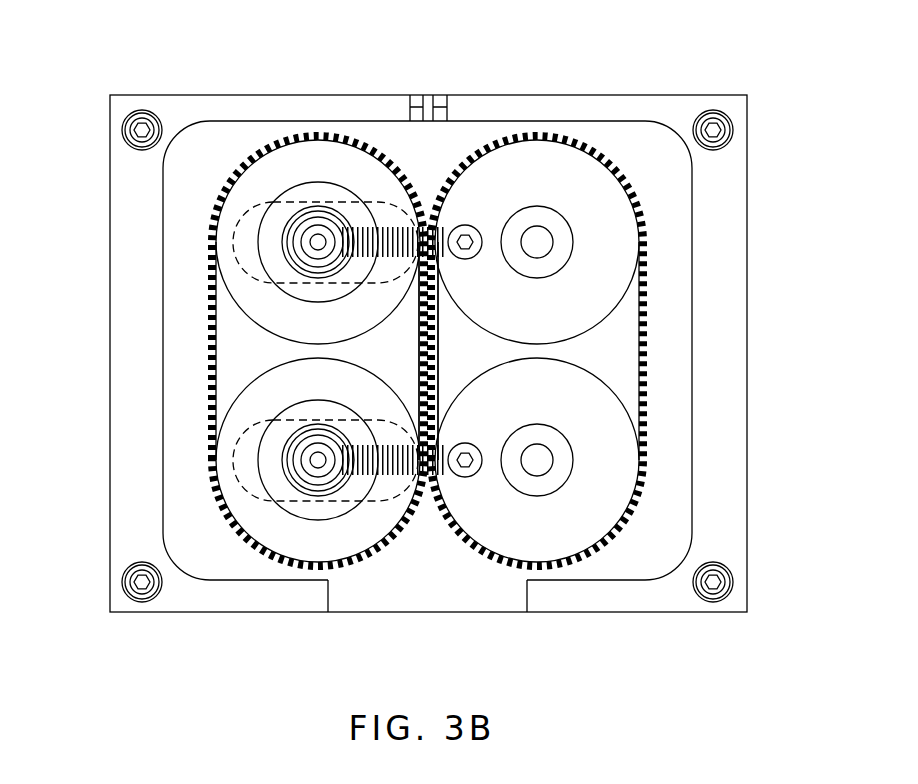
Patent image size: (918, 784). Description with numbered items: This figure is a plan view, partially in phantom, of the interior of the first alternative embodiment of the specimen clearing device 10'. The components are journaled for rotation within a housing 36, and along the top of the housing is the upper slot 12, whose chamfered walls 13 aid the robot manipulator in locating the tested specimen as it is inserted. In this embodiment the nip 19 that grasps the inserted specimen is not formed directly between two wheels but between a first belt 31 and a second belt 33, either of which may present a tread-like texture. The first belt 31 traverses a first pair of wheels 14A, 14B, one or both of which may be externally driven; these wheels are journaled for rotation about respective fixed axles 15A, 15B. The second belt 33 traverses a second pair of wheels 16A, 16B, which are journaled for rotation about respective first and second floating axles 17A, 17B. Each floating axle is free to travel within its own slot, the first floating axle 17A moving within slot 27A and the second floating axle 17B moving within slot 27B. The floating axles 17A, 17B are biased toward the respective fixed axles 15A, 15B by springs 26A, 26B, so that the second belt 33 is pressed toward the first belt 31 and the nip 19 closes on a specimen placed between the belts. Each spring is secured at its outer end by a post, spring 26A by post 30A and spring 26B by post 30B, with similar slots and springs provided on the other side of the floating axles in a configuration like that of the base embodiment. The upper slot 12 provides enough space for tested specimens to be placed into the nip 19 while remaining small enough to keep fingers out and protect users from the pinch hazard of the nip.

The specimen clearing device 10' is at (736, 45).
The upper slot 12 is at (447, 100).
The chamfered walls 13 is at (413, 100).
The first wheel of first pair 14A is at (593, 233).
The second wheel of first pair 14B is at (592, 475).
The first fixed axle 15A is at (540, 243).
The second fixed axle 15B is at (540, 462).
The first wheel of second pair 16A is at (242, 284).
The second wheel of second pair 16B is at (257, 403).
The first floating axle 17A is at (318, 250).
The second floating axle 17B is at (318, 468).
The nip 19 is at (430, 213).
The first spring 26A is at (390, 228).
The second spring 26B is at (395, 445).
The first slot 27A is at (237, 247).
The second slot 27B is at (237, 467).
The first post 30A is at (475, 225).
The second post 30B is at (473, 442).
The first belt 31 is at (658, 254).
The second belt 33 is at (203, 228).
The housing 36 is at (732, 434).